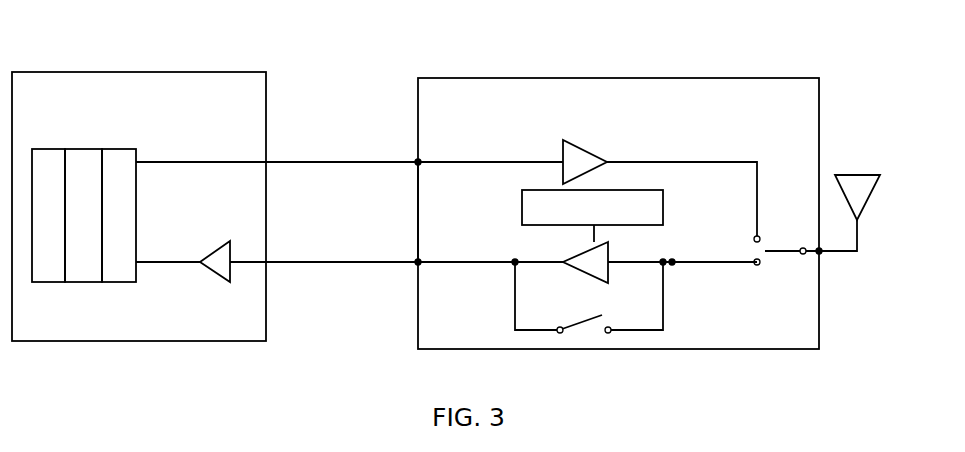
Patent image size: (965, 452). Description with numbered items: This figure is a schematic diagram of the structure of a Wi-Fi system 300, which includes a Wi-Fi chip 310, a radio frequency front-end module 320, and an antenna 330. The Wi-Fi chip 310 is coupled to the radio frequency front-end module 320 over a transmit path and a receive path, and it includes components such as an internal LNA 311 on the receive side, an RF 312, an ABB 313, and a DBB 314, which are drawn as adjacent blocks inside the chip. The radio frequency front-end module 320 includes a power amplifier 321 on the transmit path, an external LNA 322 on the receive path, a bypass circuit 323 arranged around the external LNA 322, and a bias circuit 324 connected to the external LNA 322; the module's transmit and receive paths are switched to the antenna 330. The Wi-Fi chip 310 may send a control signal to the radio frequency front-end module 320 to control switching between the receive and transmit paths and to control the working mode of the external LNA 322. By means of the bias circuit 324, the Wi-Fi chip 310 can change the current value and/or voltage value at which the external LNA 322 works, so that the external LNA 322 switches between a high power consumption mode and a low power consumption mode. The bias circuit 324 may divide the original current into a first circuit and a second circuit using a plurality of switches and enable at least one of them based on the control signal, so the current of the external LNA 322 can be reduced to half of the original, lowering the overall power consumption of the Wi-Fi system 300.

The Wi-Fi system 300 is at (722, 66).
The Wi-Fi chip 310 is at (266, 121).
The internal LNA 311 is at (238, 238).
The RF 312 is at (146, 149).
The ABB 313 is at (105, 149).
The DBB 314 is at (66, 149).
The radio frequency front-end module 320 is at (819, 122).
The power amplifier 321 is at (585, 150).
The external LNA 322 is at (610, 244).
The bypass circuit 323 is at (590, 317).
The bias circuit 324 is at (620, 185).
The antenna 330 is at (900, 170).